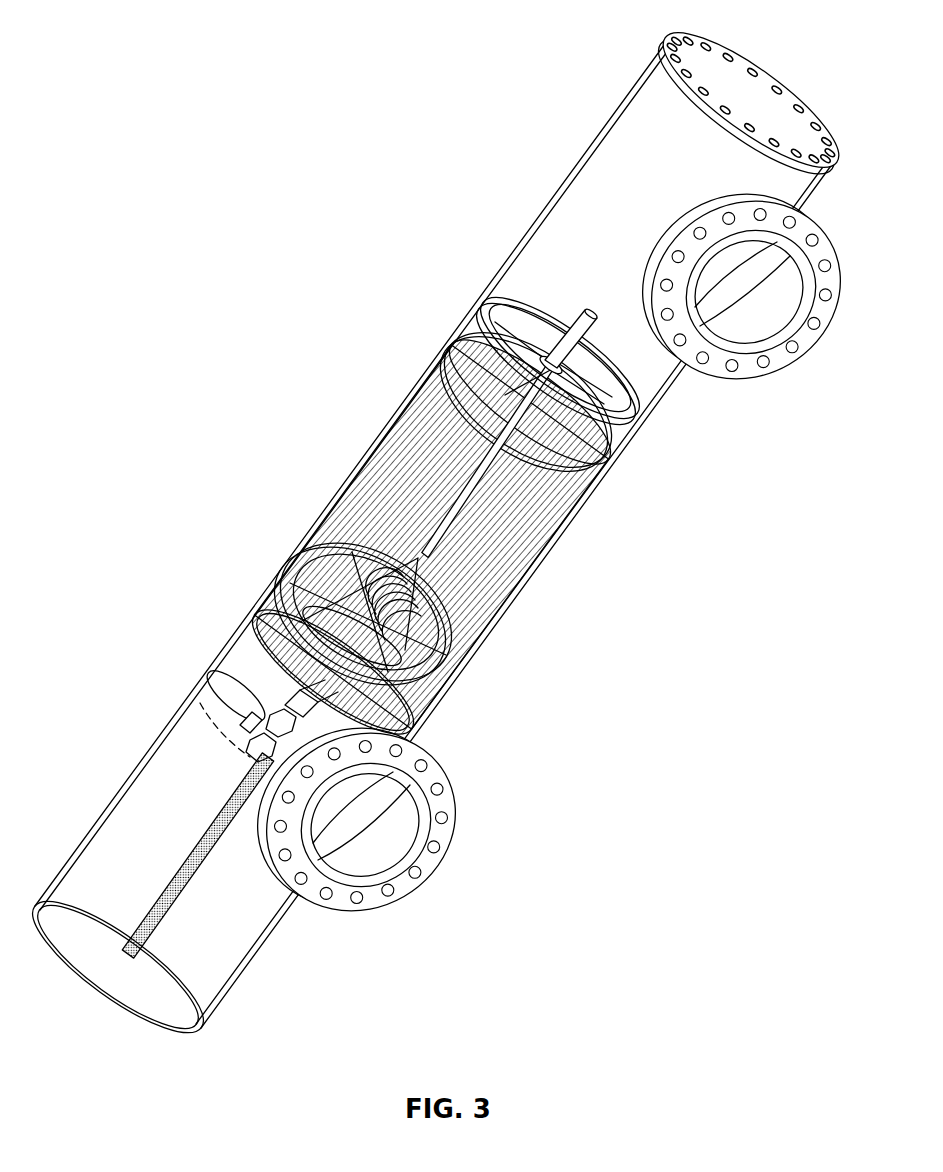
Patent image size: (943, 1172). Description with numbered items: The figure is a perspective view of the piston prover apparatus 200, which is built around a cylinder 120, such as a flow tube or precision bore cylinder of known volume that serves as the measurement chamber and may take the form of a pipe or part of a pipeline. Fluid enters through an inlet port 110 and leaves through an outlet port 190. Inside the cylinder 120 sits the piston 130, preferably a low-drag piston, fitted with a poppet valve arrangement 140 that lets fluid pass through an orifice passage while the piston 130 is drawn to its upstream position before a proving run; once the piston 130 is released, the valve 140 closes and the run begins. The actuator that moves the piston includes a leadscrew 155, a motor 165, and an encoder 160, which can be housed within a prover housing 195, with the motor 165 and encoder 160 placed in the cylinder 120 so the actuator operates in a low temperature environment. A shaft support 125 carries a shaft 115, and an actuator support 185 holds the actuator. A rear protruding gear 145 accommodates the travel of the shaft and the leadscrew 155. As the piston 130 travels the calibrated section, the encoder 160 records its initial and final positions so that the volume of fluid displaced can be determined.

The piston prover apparatus 200 is at (226, 84).
The inlet port 110 is at (770, 360).
The shaft 115 is at (423, 403).
The cylinder 120 is at (390, 447).
The shaft support 125 is at (500, 305).
The piston 130 is at (303, 580).
The poppet valve arrangement 140 is at (347, 556).
The rear protruding gear 145 is at (200, 853).
The leadscrew 155 is at (260, 623).
The encoder 160 is at (228, 702).
The motor 165 is at (232, 688).
The actuator support 185 is at (300, 730).
The outlet port 190 is at (455, 808).
The prover housing 195 is at (437, 363).